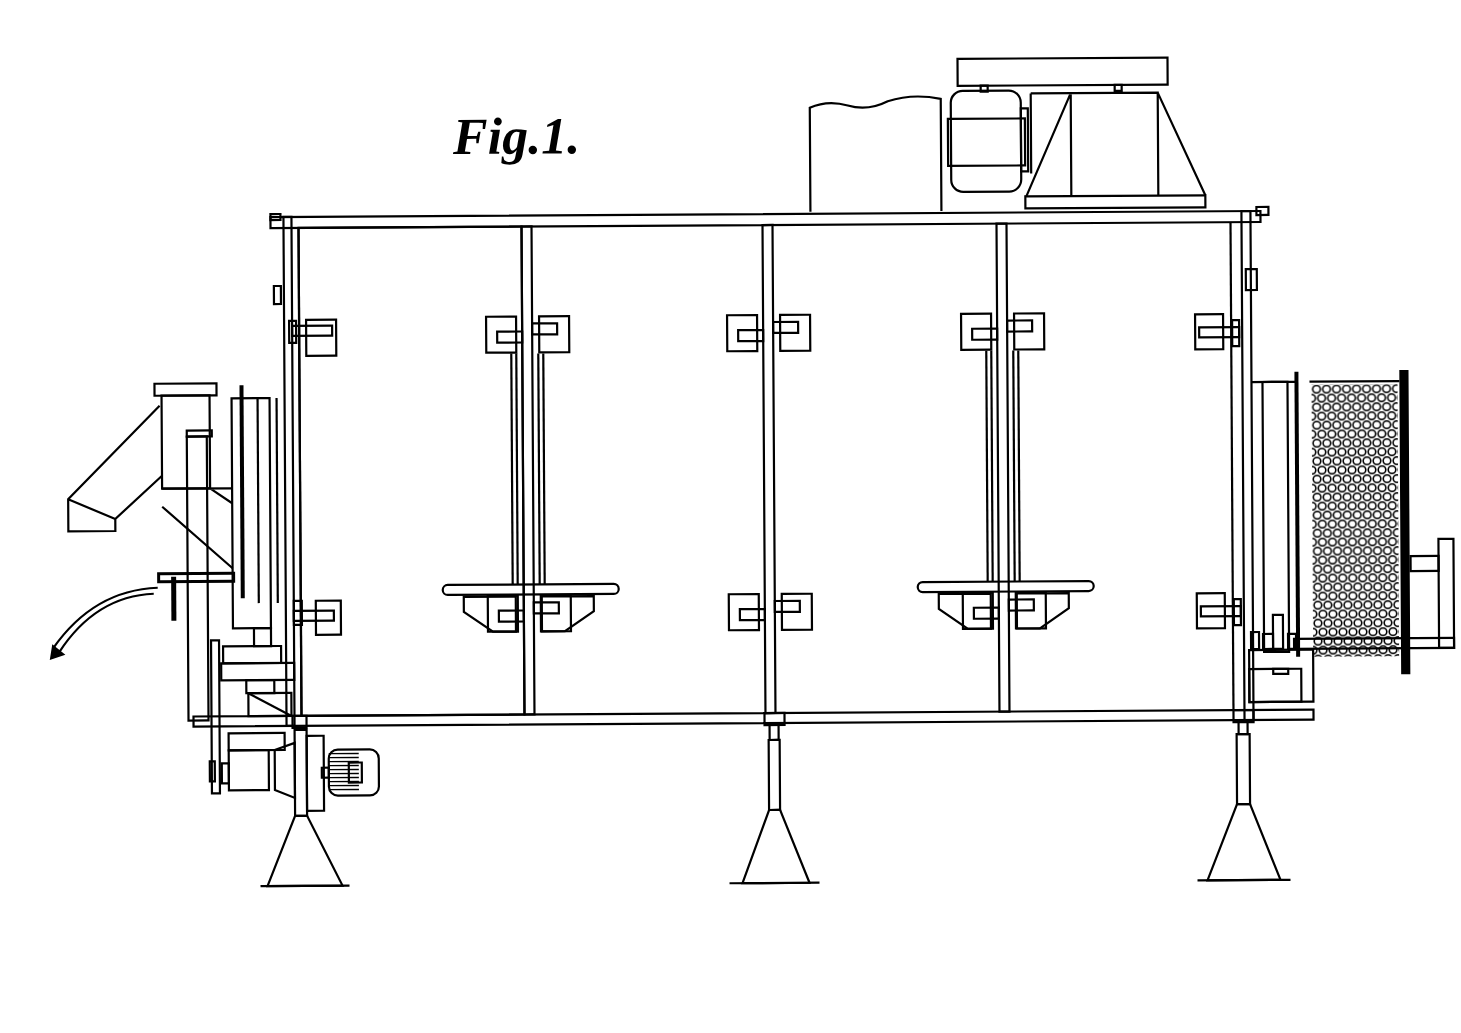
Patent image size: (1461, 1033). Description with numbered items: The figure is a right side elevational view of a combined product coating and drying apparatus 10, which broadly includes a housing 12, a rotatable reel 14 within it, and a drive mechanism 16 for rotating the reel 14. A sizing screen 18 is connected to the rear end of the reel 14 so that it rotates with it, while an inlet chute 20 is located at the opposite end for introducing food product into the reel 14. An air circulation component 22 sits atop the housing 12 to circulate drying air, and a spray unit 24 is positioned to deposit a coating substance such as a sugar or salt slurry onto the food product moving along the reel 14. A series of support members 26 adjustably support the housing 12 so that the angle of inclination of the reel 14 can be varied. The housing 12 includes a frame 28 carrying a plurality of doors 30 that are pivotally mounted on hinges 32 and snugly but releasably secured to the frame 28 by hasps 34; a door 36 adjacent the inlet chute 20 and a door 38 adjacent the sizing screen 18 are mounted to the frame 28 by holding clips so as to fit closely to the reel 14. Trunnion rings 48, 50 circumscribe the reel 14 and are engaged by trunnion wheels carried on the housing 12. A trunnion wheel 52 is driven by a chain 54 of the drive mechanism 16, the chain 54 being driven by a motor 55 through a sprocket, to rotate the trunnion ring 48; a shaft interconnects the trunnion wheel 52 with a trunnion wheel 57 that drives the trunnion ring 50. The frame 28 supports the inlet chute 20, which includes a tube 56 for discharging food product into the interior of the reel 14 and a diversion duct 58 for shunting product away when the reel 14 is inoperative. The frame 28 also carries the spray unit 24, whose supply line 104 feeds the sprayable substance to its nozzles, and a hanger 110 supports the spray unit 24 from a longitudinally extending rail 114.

The combined product coating and drying apparatus 10 is at (240, 184).
The housing 12 is at (559, 215).
The rotatable reel 14 is at (277, 389).
The drive mechanism 16 is at (337, 794).
The sizing screen 18 is at (1360, 386).
The inlet chute 20 is at (159, 405).
The air circulation component 22 is at (1192, 153).
The spray unit 24 is at (152, 595).
The support members 26 is at (779, 754).
The frame 28 is at (195, 688).
The doors 30 is at (455, 235).
The hinges 32 is at (303, 618).
The hasps 34 is at (505, 323).
The door 36 is at (278, 246).
The door 38 is at (1254, 300).
The trunnion ring 48 is at (258, 393).
The trunnion ring 50 is at (1278, 385).
The trunnion wheel 52 is at (280, 643).
The chain 54 is at (210, 745).
The motor 55 is at (375, 757).
The tube 56 is at (183, 522).
The trunnion wheel 57 is at (1283, 648).
The diversion duct 58 is at (132, 437).
The supply line 104 is at (104, 623).
The hanger 110 is at (175, 625).
The rail 114 is at (160, 575).